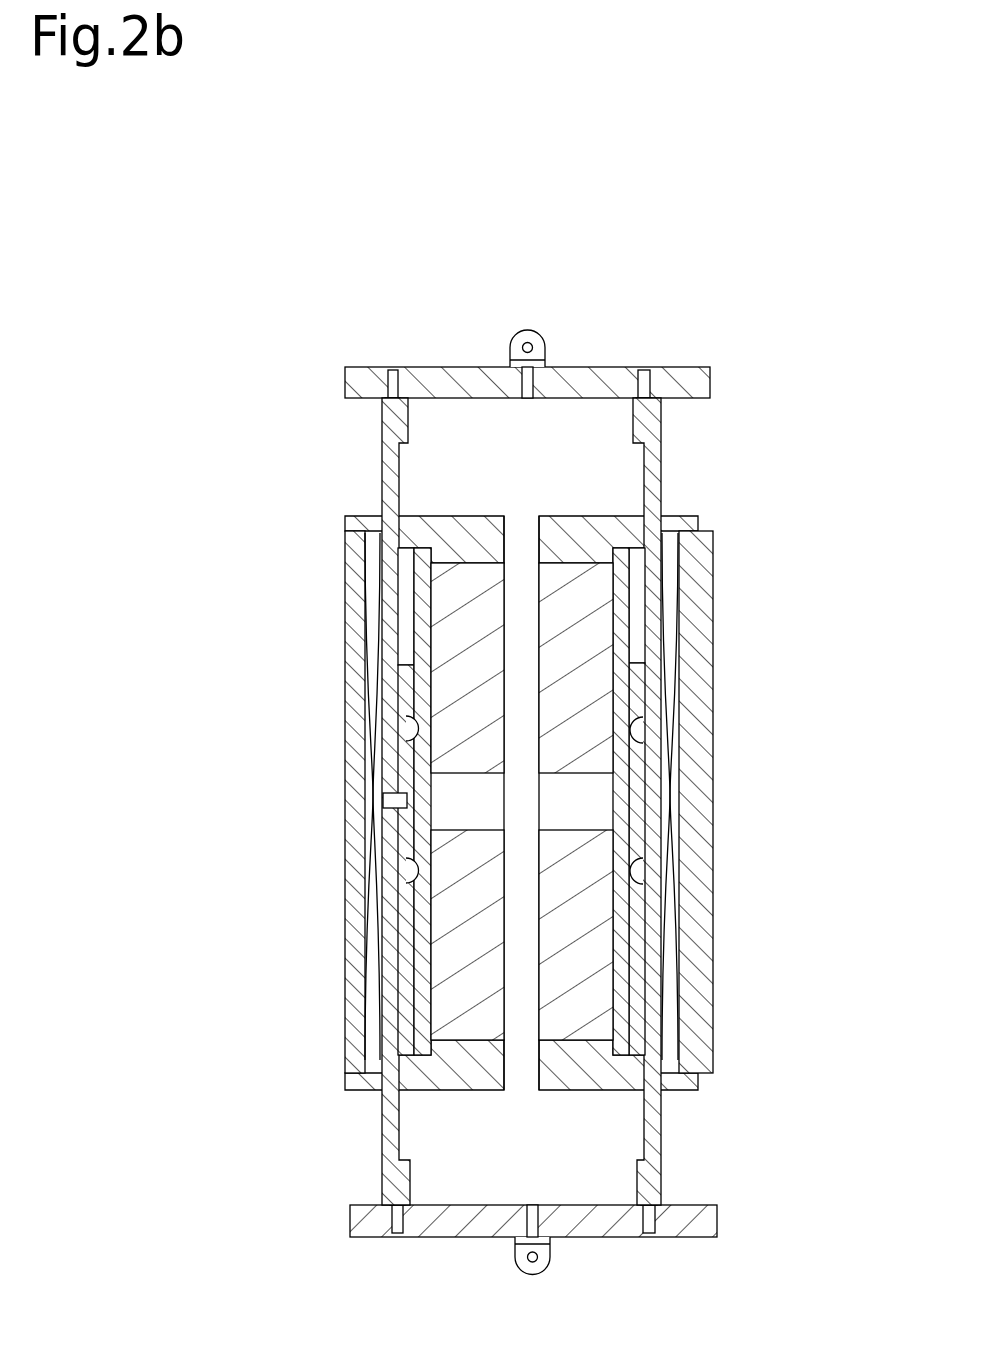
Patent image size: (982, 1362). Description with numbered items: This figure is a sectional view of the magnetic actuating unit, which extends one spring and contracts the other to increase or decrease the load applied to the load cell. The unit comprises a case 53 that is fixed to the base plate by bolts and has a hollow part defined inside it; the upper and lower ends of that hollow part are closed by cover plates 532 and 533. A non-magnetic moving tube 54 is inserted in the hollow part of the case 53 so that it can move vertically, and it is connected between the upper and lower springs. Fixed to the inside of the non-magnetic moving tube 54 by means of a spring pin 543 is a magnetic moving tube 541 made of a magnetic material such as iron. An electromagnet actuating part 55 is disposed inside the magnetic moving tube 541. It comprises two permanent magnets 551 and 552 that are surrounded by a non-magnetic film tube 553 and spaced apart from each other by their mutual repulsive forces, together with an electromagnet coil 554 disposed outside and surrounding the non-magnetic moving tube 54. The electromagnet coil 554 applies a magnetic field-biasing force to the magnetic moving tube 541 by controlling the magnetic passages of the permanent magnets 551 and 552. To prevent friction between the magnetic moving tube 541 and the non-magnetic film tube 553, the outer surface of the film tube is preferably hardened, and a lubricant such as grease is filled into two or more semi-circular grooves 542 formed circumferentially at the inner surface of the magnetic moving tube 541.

The case 53 is at (357, 1005).
The non-magnetic moving tube 54 is at (380, 470).
The electromagnet actuating part 55 is at (625, 796).
The cover plate 532 is at (590, 517).
The cover plate 533 is at (453, 1090).
The magnetic moving tube 541 is at (407, 686).
The semi-circular grooves 542 is at (407, 730).
The spring pin 543 is at (387, 801).
The permanent magnet 551 is at (590, 920).
The permanent magnet 552 is at (585, 750).
The non-magnetic film tube 553 is at (622, 826).
The electromagnet coil 554 is at (832, 758).